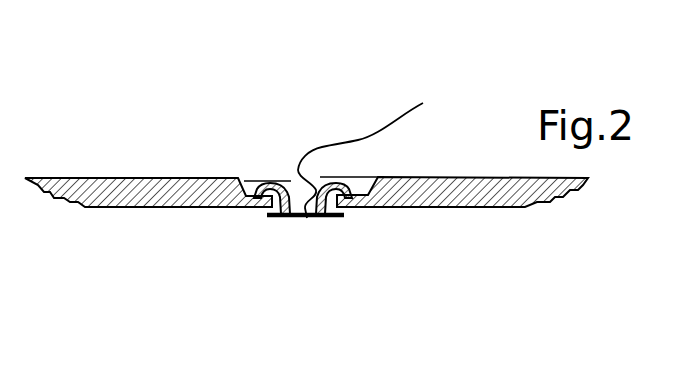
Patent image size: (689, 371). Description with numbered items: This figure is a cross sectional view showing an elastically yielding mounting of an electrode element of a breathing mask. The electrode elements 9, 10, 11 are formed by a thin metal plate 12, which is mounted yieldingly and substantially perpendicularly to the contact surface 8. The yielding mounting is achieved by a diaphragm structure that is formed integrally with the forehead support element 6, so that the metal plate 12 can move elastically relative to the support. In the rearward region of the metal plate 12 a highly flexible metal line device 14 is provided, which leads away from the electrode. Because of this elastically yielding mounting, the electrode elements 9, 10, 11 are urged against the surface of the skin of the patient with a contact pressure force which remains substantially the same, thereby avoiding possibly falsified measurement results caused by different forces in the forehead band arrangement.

The forehead support element 6 is at (163, 190).
The contact surface 8 is at (160, 208).
The electrode element 9 is at (347, 267).
The electrode element 10 is at (272, 198).
The electrode element 11 is at (334, 198).
The thin metal plate 12 is at (330, 219).
The highly flexible metal line device 14 is at (358, 140).